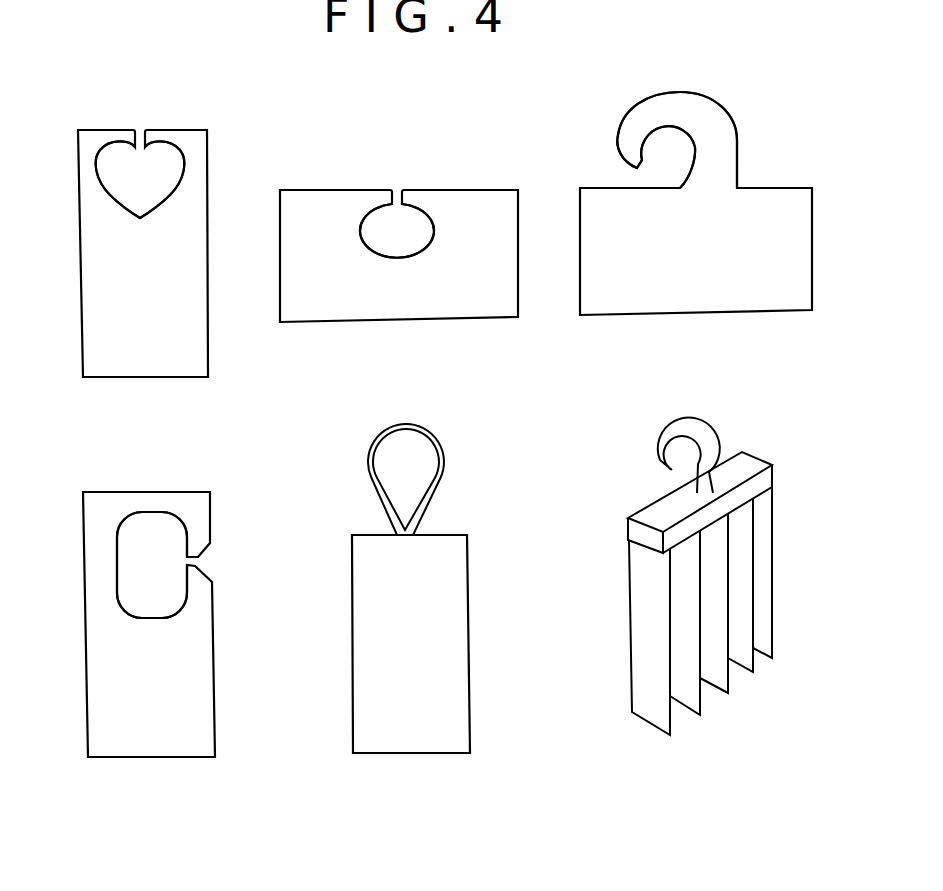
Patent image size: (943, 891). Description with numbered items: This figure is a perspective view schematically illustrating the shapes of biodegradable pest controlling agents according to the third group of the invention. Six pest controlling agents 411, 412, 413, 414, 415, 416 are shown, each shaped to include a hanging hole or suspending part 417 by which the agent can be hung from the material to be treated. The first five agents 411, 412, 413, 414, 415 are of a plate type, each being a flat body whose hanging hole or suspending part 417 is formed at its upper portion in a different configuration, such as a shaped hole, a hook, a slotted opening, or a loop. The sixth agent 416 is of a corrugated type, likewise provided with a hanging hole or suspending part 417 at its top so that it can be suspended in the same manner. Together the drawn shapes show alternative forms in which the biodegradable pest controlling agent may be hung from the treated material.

The pest controlling agent 411 is at (195, 147).
The pest controlling agent 412 is at (488, 208).
The pest controlling agent 413 is at (785, 210).
The pest controlling agent 414 is at (190, 512).
The pest controlling agent 415 is at (448, 560).
The pest controlling agent 416 is at (647, 620).
The hanging hole or suspending part 417 is at (167, 173).